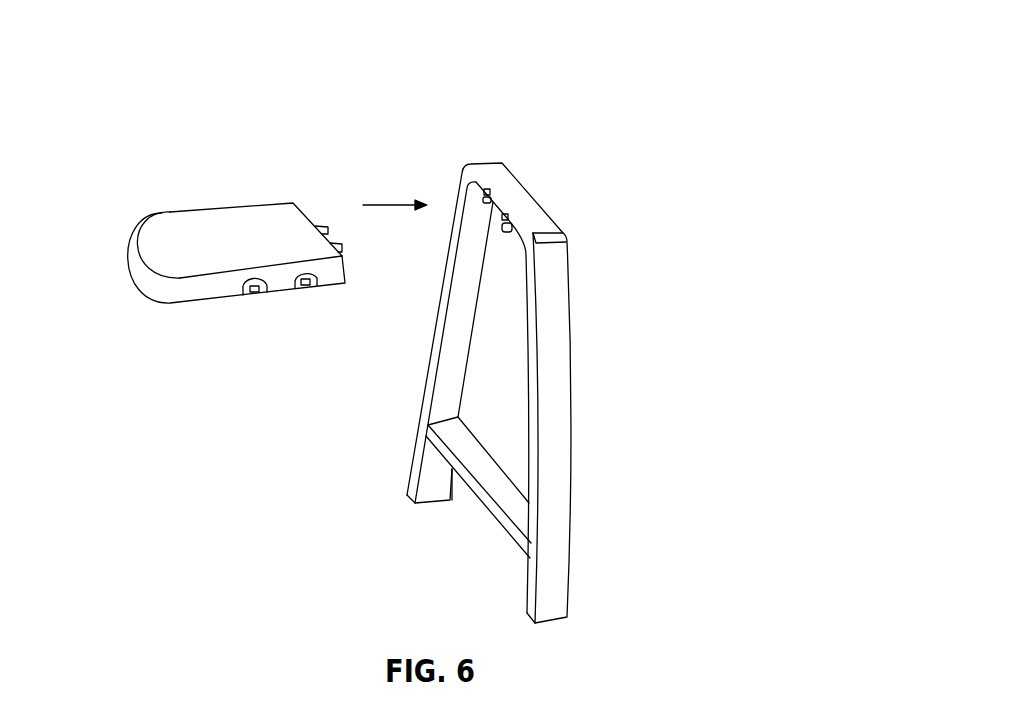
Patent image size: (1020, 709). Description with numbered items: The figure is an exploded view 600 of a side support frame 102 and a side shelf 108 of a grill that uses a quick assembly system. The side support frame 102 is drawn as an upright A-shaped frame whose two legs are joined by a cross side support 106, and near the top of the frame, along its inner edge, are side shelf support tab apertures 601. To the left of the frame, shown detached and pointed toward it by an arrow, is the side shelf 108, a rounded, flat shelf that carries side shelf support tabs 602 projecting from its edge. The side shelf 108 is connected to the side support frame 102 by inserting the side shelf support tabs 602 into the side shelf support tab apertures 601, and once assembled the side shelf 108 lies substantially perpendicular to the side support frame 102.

The stand assembly 600 is at (175, 69).
The side support frame 102 is at (560, 430).
The cross side support 106 is at (502, 492).
The side shelf 108 is at (237, 223).
The side shelf support tab apertures 601 is at (485, 198).
The side shelf support tabs 602 is at (320, 226).